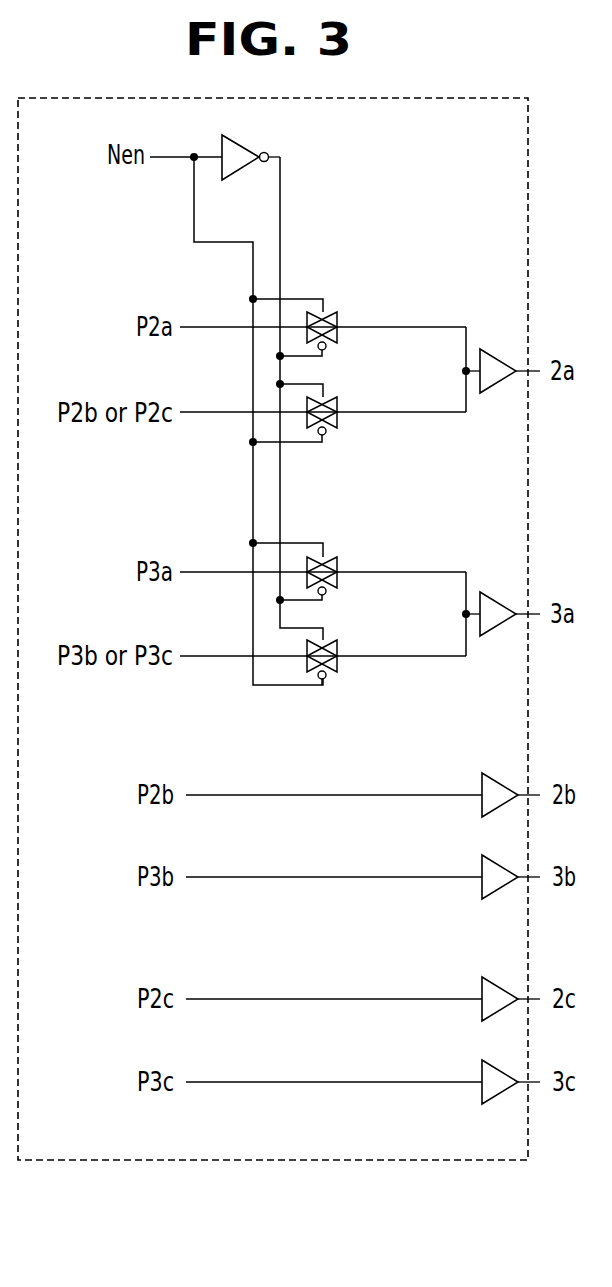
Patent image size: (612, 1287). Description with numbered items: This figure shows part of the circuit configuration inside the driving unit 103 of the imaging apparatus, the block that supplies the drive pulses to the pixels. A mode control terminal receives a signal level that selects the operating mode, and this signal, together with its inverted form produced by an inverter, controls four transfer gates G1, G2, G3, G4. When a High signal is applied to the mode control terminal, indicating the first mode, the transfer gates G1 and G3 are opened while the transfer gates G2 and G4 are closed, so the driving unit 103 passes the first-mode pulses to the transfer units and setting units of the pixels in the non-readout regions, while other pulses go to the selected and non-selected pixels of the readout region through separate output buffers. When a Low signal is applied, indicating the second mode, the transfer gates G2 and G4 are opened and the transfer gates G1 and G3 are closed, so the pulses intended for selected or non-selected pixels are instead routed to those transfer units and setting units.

The transfer gate G1 is at (350, 301).
The transfer gate G2 is at (350, 391).
The transfer gate G3 is at (350, 549).
The transfer gate G4 is at (350, 633).
The driving unit 103 is at (140, 1178).